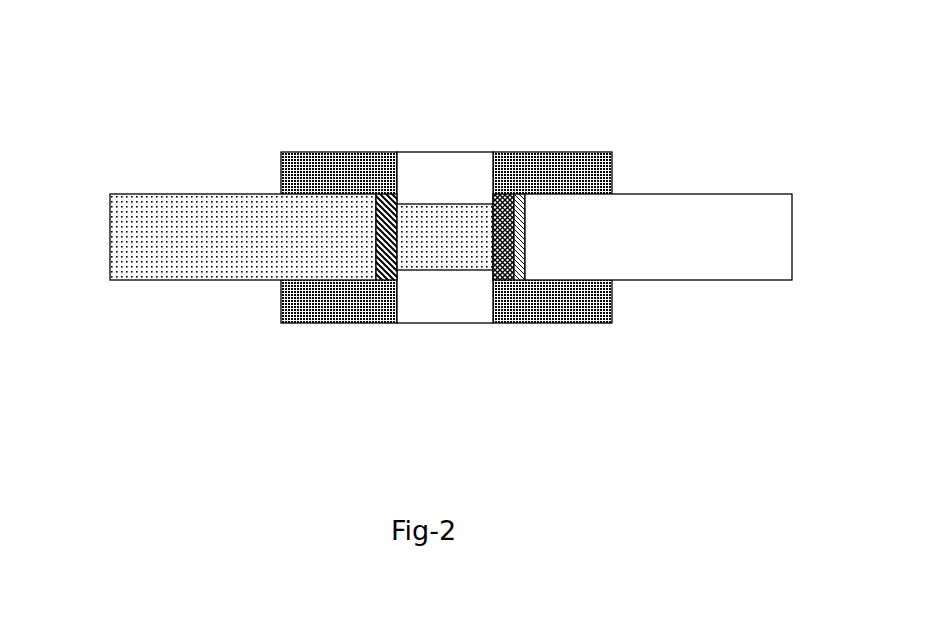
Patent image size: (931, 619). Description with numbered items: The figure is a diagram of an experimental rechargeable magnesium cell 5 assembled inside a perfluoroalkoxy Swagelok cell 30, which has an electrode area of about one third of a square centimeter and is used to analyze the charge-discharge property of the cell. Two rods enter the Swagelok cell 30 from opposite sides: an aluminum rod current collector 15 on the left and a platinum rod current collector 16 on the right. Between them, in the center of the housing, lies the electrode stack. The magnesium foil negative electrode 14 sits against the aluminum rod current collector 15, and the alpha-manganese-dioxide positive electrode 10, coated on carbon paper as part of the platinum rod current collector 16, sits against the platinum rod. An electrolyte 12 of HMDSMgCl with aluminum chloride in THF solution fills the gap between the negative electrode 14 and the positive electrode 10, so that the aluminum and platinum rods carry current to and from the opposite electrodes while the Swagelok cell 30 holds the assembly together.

The rechargeable magnesium cell 5 is at (409, 210).
The positive electrode 10 is at (503, 210).
The electrolyte 12 is at (437, 250).
The negative electrode 14 is at (395, 205).
The aluminum rod current collector 15 is at (146, 238).
The platinum rod current collector 16 is at (528, 235).
The Swagelok cell 30 is at (338, 313).